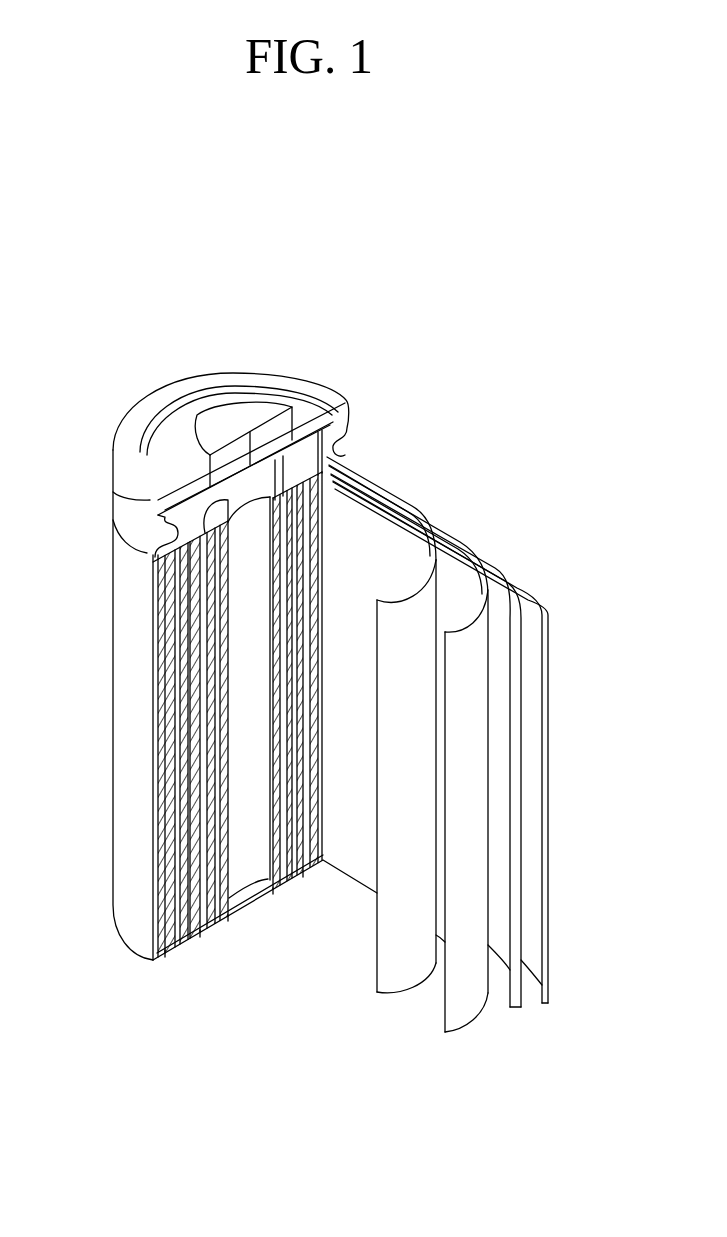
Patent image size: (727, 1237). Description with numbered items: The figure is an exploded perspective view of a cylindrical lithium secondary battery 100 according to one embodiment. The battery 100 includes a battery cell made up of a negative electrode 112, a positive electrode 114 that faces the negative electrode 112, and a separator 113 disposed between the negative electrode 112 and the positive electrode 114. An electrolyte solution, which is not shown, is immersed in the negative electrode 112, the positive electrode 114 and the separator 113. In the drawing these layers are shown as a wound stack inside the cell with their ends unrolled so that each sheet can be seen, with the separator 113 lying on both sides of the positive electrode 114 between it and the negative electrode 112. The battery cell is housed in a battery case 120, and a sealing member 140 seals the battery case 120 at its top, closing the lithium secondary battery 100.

The lithium secondary battery 100 is at (333, 356).
The negative electrode 112 is at (547, 580).
The separator 113 is at (370, 510).
The positive electrode 114 is at (455, 552).
The battery case 120 is at (127, 823).
The sealing member 140 is at (215, 412).